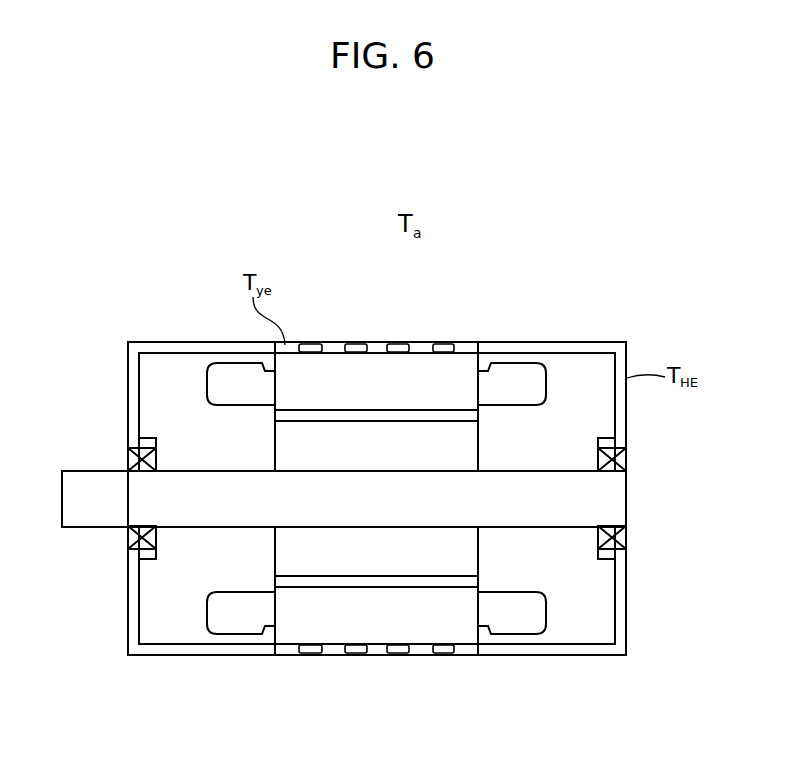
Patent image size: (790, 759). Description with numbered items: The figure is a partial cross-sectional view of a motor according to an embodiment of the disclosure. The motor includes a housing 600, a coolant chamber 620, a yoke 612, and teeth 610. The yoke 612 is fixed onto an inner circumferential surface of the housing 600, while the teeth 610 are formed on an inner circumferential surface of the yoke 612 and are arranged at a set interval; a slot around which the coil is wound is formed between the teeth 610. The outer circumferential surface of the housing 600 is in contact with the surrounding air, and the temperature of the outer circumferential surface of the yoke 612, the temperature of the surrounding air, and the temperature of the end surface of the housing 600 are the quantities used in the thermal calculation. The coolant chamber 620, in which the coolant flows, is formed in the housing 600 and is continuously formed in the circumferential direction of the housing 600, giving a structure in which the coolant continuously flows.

The housing 600 is at (587, 342).
The teeth 610 is at (475, 415).
The yoke 612 is at (465, 367).
The coolant chamber 620 is at (351, 345).